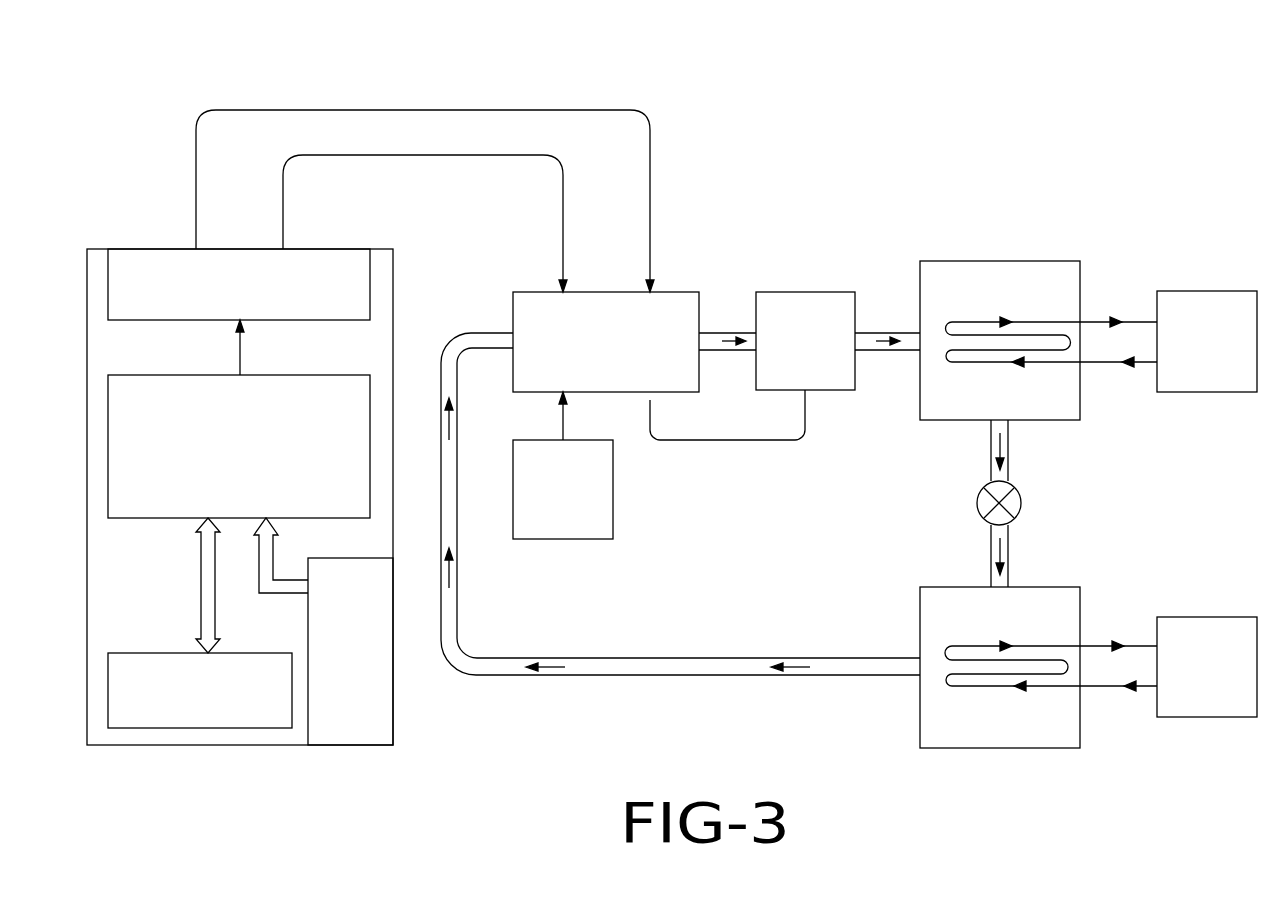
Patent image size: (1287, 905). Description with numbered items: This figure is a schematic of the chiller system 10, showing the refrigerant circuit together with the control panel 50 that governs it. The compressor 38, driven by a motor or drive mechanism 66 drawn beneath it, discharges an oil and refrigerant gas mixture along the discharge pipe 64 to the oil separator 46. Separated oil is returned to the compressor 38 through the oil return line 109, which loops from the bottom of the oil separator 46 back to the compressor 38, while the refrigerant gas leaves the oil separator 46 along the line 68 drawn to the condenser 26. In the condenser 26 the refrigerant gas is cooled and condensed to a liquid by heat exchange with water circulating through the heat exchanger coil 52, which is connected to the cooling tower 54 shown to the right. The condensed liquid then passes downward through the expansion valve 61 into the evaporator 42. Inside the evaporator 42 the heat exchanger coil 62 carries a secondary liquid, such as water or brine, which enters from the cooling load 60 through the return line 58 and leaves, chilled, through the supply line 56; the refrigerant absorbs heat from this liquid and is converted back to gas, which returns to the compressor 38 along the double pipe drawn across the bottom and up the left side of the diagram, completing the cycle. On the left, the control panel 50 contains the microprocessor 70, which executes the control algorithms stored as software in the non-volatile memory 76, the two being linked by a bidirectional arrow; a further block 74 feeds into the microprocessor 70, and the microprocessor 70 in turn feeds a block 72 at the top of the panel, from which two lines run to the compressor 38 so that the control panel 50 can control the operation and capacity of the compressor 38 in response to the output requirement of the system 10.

The chiller system 10 is at (120, 167).
The condenser 26 is at (1003, 261).
The compressor 38 is at (583, 355).
The evaporator 42 is at (957, 587).
The oil separator 46 is at (782, 355).
The control panel 50 is at (157, 604).
The heat exchanger coil 52 is at (1063, 362).
The cooling tower 54 is at (1184, 355).
The supply line 56 is at (1105, 646).
The return line 58 is at (1105, 686).
The cooling load 60 is at (1183, 681).
The expansion valve 61 is at (1021, 503).
The heat exchanger coil 62 is at (1060, 686).
The discharge pipe 64 is at (740, 333).
The motor or drive mechanism 66 is at (539, 504).
The second conduit 68 is at (890, 333).
The microprocessor 70 is at (214, 458).
The communication interface 72 is at (214, 298).
The input device 74 is at (326, 666).
The non-volatile memory 76 is at (184, 706).
The oil return line 109 is at (728, 440).